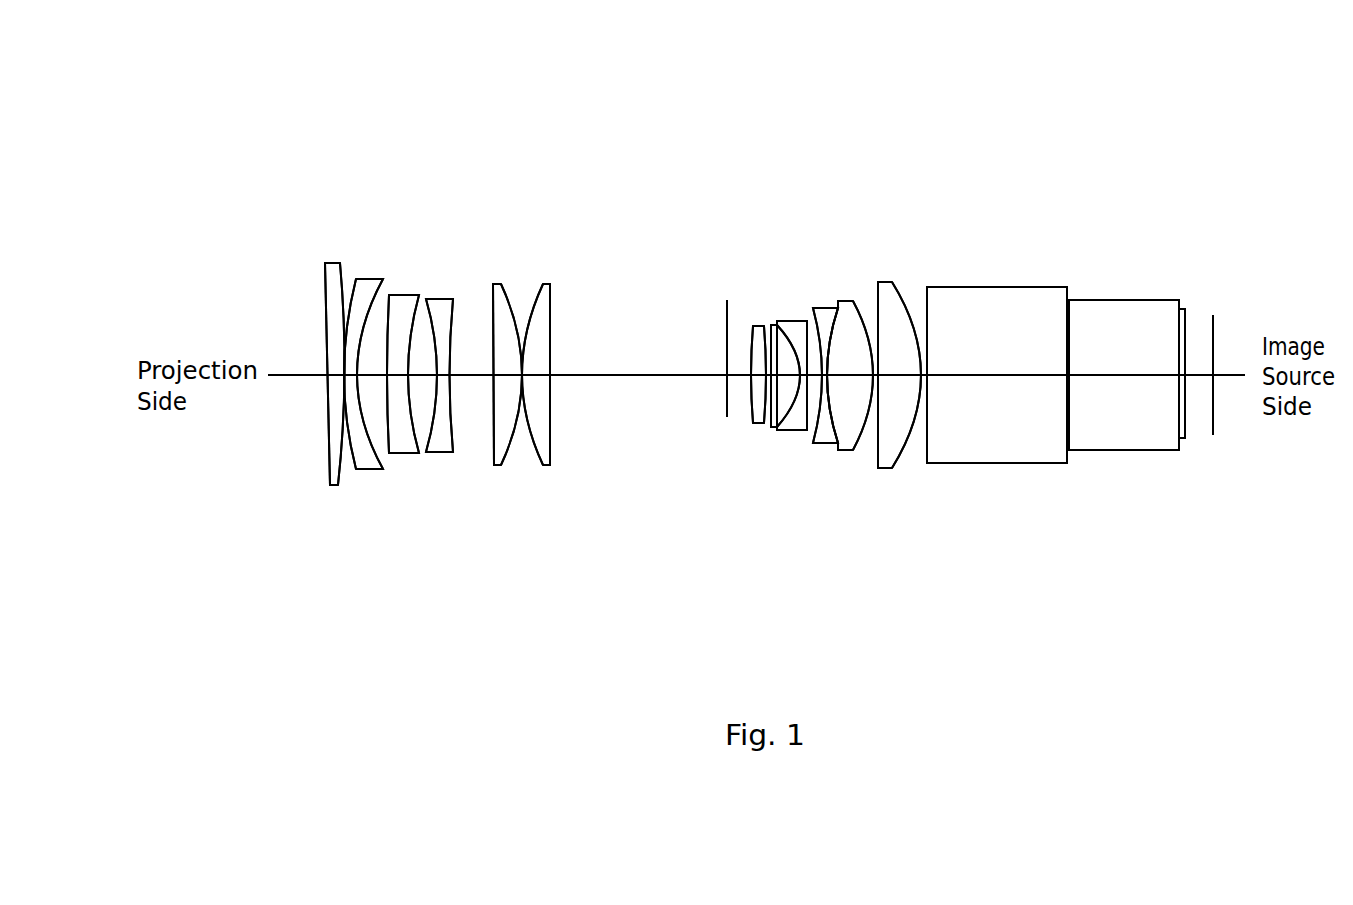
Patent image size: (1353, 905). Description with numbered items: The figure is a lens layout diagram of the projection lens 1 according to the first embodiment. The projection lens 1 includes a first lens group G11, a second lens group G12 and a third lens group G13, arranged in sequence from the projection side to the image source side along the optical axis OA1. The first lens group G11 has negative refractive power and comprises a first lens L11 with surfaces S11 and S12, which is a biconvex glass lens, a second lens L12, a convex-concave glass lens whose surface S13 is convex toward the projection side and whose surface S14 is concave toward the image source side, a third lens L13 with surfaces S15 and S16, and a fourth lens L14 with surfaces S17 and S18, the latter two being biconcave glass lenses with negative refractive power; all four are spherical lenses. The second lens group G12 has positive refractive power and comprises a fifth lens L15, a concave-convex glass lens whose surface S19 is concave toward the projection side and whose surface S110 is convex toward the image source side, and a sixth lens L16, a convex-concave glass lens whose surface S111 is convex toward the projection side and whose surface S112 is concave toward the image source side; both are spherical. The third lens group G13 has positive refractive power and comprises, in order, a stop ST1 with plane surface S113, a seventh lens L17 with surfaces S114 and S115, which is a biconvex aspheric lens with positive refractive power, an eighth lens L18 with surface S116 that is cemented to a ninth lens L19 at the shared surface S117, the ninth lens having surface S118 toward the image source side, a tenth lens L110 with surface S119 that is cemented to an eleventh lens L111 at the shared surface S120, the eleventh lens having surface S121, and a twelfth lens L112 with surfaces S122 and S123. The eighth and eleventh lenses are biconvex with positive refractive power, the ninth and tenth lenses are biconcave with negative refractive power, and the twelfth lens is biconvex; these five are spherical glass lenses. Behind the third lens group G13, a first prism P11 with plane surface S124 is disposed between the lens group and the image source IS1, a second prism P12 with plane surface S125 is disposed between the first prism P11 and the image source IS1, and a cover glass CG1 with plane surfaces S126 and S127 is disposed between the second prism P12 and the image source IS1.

The projection lens 1 is at (795, 77).
The optical axis OA1 is at (300, 378).
The first lens group G11 is at (488, 137).
The second lens group G12 is at (622, 137).
The third lens group G13 is at (905, 137).
The first lens L11 is at (335, 263).
The second lens L12 is at (375, 279).
The third lens L13 is at (408, 295).
The fourth lens L14 is at (442, 298).
The fifth lens L15 is at (497, 284).
The sixth lens L16 is at (550, 284).
The stop ST1 is at (727, 300).
The seventh lens L17 is at (757, 326).
The eighth lens L18 is at (772, 325).
The ninth lens L19 is at (793, 321).
The tenth lens L110 is at (827, 308).
The eleventh lens L111 is at (849, 301).
The twelfth lens L112 is at (888, 282).
The first prism P11 is at (1052, 287).
The second prism P12 is at (1112, 300).
The cover glass CG1 is at (1183, 312).
The image source IS1 is at (1215, 316).
The surface S11 is at (325, 453).
The surface S12 is at (342, 460).
The surface S13 is at (358, 466).
The surface S14 is at (386, 468).
The surface S15 is at (393, 455).
The surface S16 is at (417, 455).
The surface S17 is at (453, 460).
The surface S18 is at (466, 456).
The surface S19 is at (490, 462).
The surface S110 is at (516, 450).
The surface S111 is at (541, 462).
The surface S112 is at (552, 463).
The surface S113 is at (727, 417).
The surface S114 is at (757, 420).
The surface S115 is at (771, 425).
The surface S116 is at (779, 428).
The surface S117 is at (776, 430).
The surface S118 is at (801, 430).
The surface S119 is at (813, 435).
The surface S120 is at (839, 443).
The surface S121 is at (857, 450).
The surface S122 is at (893, 455).
The surface S123 is at (886, 448).
The surface S124 is at (930, 432).
The surface S125 is at (1070, 424).
The surface S126 is at (1183, 438).
The surface S127 is at (1187, 437).